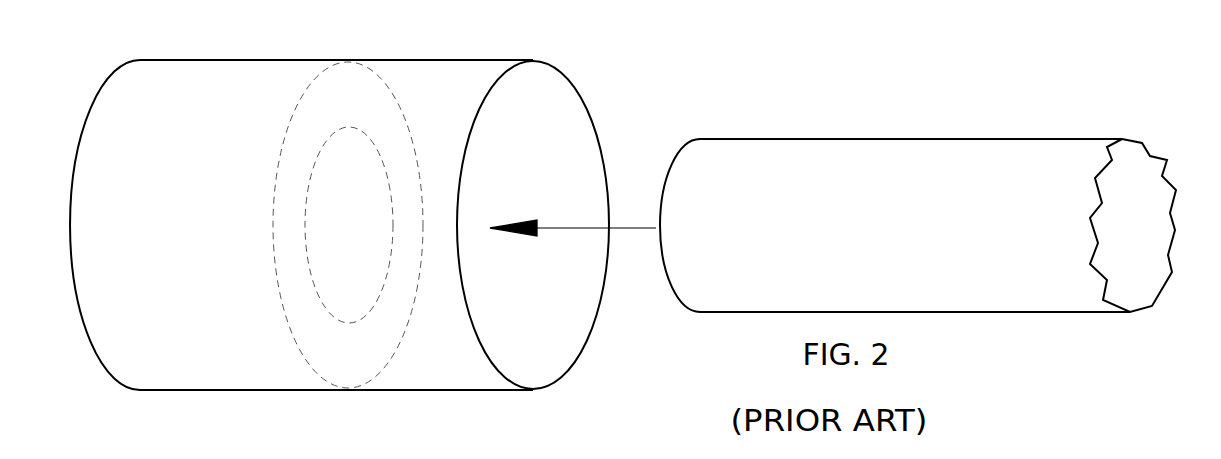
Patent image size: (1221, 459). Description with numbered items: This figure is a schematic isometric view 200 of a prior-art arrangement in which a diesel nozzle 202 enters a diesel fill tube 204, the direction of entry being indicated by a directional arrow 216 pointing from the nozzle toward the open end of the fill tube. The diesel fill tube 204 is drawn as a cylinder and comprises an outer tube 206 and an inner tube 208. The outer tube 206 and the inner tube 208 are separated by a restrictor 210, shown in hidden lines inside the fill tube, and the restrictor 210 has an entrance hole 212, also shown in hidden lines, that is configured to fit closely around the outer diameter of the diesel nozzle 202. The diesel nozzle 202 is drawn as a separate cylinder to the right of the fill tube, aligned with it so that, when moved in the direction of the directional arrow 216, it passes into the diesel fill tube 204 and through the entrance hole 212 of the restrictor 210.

The schematic isometric view 200 is at (796, 108).
The diesel nozzle 202 is at (1013, 168).
The diesel fill tube 204 is at (562, 320).
The outer tube 206 is at (430, 380).
The inner tube 208 is at (133, 376).
The restrictor 210 is at (305, 318).
The entrance hole 212 is at (342, 188).
The directional arrow 216 is at (571, 228).